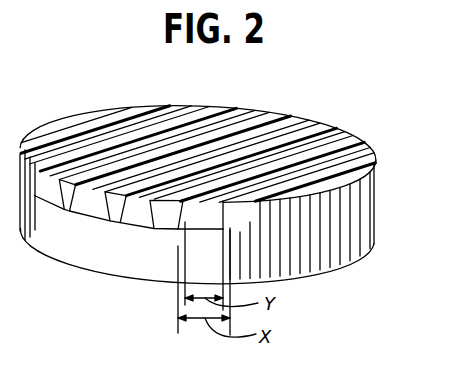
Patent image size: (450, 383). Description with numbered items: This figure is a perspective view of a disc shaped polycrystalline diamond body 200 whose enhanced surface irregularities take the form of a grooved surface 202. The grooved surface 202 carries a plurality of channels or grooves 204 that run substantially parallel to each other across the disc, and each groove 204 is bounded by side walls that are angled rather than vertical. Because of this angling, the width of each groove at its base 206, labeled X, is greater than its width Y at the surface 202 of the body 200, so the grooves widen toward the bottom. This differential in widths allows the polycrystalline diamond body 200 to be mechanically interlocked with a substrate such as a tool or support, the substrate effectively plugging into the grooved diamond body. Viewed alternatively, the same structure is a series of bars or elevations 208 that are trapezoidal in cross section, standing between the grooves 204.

The polycrystalline diamond body 200 is at (78, 116).
The grooved surface 202 is at (293, 112).
The grooves 204 is at (141, 222).
The base 206 is at (226, 222).
The bars or elevations 208 is at (177, 148).